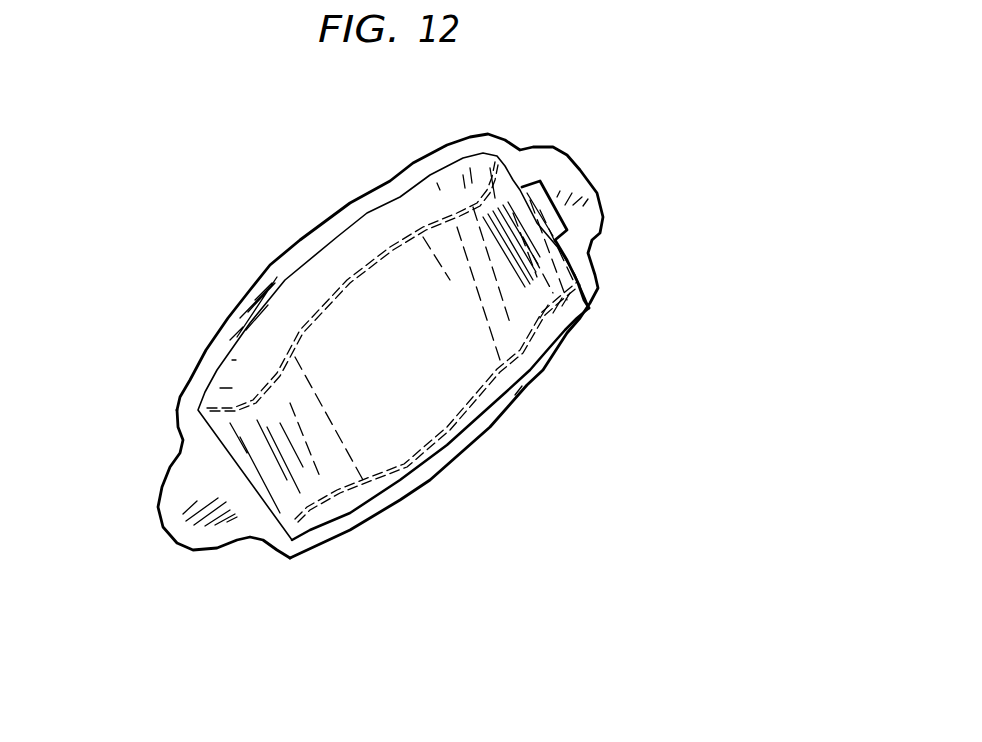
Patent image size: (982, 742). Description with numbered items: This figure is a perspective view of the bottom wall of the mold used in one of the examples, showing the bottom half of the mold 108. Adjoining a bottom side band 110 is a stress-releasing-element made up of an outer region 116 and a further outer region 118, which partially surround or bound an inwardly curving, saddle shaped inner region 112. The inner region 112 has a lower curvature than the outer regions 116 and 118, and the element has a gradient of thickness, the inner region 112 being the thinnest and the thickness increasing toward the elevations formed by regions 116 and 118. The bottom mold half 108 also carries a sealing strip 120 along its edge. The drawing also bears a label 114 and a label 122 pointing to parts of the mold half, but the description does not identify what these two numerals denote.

The lens assembly 108 is at (638, 276).
The lens 110 is at (345, 250).
The lens rim 112 is at (463, 387).
The housing flange 114 is at (158, 555).
The bonding region 116 is at (503, 230).
The bonding region 118 is at (303, 478).
The shell 120 is at (425, 163).
The flange surface 122 is at (222, 483).